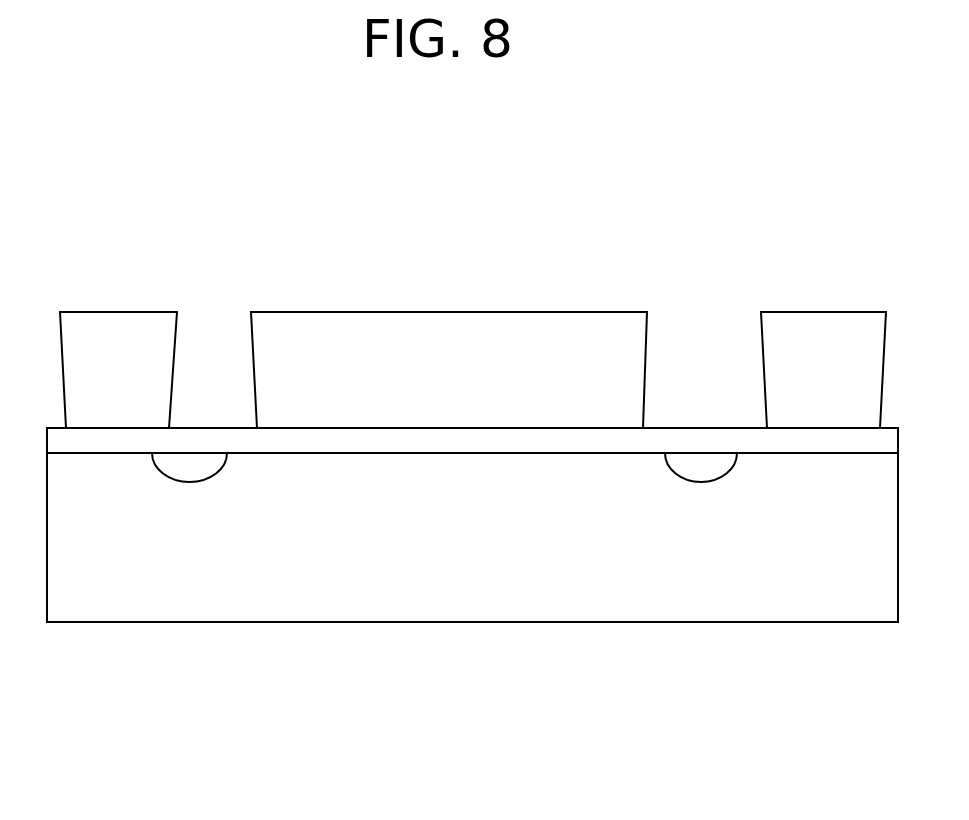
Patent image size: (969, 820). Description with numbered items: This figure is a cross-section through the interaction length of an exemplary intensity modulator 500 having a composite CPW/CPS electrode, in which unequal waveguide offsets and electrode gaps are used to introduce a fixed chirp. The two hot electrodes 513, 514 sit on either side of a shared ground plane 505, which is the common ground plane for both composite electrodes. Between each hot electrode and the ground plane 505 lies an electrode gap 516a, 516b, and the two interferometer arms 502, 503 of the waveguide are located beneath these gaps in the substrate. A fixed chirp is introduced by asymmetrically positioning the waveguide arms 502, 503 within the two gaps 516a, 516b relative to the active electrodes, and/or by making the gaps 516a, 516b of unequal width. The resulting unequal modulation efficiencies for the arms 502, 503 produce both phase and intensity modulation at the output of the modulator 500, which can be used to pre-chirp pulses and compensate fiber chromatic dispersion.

The dual-drive modulator 500 is at (469, 642).
The interferometer arm 502 is at (703, 468).
The interferometer arm 503 is at (188, 468).
The ground plane 505 is at (403, 310).
The hot electrode 513 is at (125, 309).
The hot electrode 514 is at (820, 311).
The electrode gap 516a is at (217, 333).
The electrode gap 516b is at (698, 335).